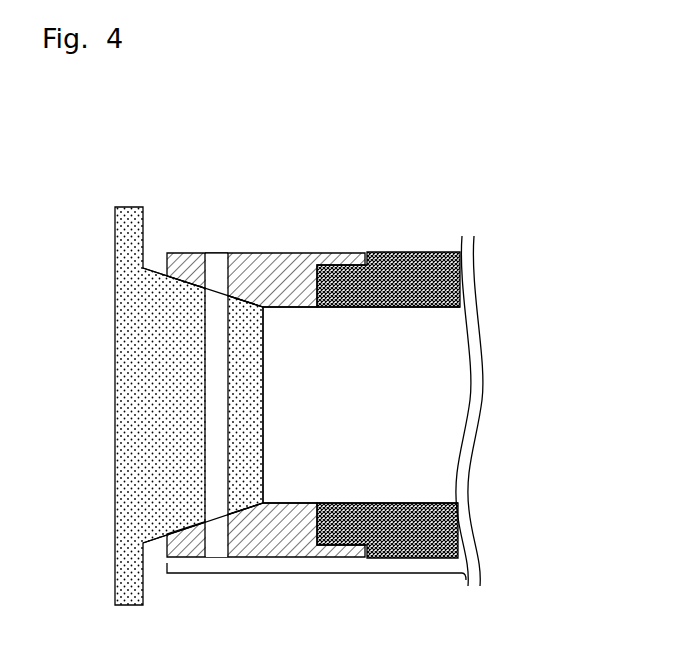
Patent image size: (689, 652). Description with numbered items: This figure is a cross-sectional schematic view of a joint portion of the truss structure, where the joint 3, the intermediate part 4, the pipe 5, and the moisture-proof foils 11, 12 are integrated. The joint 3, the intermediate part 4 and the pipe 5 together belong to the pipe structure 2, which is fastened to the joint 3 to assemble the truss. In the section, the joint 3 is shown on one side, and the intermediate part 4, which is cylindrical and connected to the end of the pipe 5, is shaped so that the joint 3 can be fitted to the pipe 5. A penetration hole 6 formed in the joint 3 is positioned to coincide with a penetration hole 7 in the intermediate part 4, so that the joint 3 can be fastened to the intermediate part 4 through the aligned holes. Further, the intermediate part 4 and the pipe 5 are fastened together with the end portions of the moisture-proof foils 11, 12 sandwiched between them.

The pipe structure 2 is at (332, 573).
The joint 3 is at (113, 312).
The intermediate part 4 is at (298, 254).
The pipe 5 is at (467, 302).
The penetration hole 6 is at (223, 408).
The penetration hole 7 is at (225, 260).
The moisture-proof foil 11 is at (427, 249).
The moisture-proof foil 12 is at (375, 307).